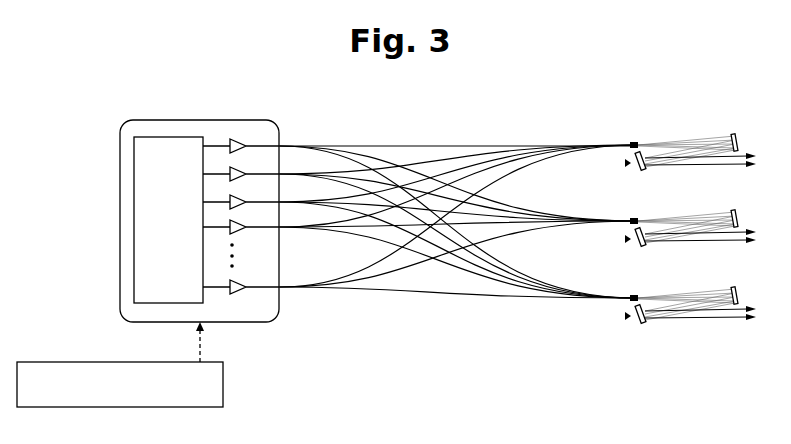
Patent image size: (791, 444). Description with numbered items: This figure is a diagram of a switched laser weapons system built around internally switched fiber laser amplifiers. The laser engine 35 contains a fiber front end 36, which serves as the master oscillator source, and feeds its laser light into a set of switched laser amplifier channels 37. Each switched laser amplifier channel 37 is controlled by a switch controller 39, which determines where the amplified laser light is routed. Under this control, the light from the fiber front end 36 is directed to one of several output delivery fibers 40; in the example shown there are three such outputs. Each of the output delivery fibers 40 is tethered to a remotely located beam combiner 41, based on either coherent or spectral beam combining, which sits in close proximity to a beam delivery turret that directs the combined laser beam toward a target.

The laser engine 35 is at (166, 120).
The fiber front end 36 is at (134, 178).
The switched laser amplifier channels 37 is at (225, 117).
The switch controller 39 is at (152, 407).
The output delivery fibers 40 is at (560, 133).
The beam combiner 41 is at (735, 132).